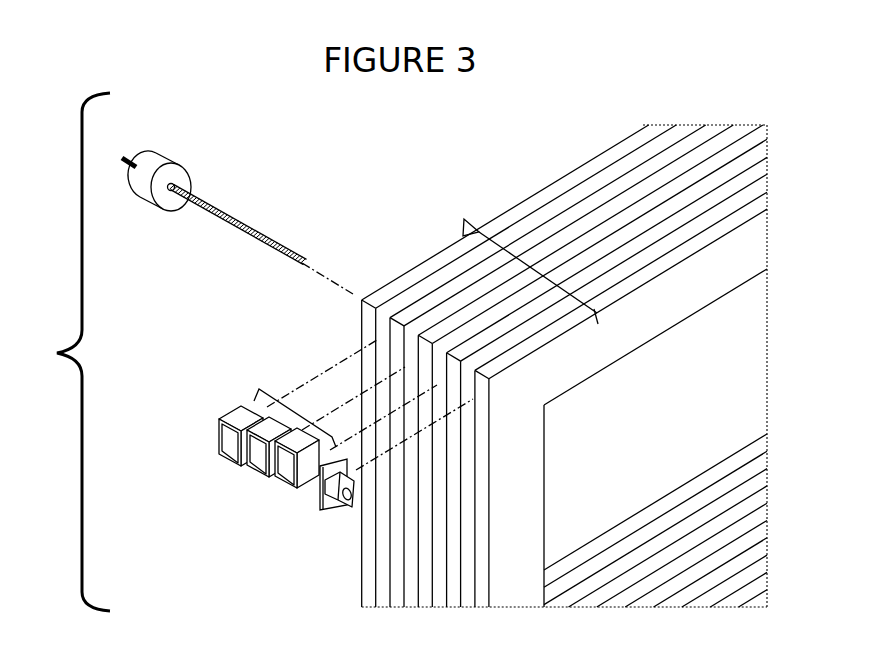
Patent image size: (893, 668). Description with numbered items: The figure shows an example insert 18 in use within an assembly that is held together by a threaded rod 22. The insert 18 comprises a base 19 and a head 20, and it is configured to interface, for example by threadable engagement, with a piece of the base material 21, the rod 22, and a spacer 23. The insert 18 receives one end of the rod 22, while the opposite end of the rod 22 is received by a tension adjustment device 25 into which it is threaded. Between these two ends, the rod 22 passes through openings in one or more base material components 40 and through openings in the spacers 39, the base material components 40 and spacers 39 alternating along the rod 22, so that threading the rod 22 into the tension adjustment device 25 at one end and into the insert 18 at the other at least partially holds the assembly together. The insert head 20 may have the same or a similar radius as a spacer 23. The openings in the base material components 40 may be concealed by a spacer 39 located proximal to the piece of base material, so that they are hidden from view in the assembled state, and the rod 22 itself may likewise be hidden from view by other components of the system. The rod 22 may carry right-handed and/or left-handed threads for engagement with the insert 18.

The insert 18 is at (336, 505).
The base 19 is at (348, 509).
The head 20 is at (320, 508).
The piece of base material 21 is at (633, 352).
The rod 22 is at (238, 220).
The spacer 23 is at (276, 487).
The tension adjustment device 25 is at (143, 202).
The spacers 39 is at (297, 413).
The base material components 40 is at (471, 221).